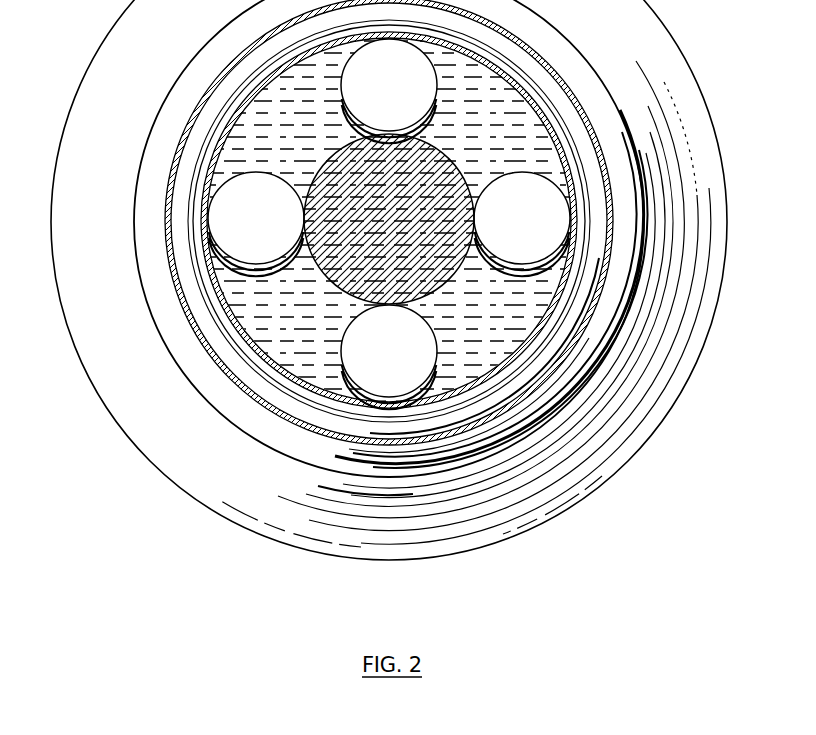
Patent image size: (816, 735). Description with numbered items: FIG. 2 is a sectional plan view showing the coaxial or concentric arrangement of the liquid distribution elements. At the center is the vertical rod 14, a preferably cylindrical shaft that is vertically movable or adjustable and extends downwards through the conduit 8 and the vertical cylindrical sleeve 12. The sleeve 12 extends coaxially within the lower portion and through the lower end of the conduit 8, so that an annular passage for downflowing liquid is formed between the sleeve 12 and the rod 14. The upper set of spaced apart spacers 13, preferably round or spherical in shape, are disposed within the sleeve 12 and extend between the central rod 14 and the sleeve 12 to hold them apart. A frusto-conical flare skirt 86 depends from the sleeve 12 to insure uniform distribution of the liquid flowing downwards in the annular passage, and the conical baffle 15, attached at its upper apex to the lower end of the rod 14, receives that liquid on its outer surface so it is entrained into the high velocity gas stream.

The conduit 8 is at (185, 145).
The vertical cylindrical sleeve 12 is at (266, 84).
The spacers 13 is at (278, 268).
The vertical rod 14 is at (456, 278).
The conical baffle 15 is at (62, 122).
The frusto-conical flare skirt 86 is at (183, 362).